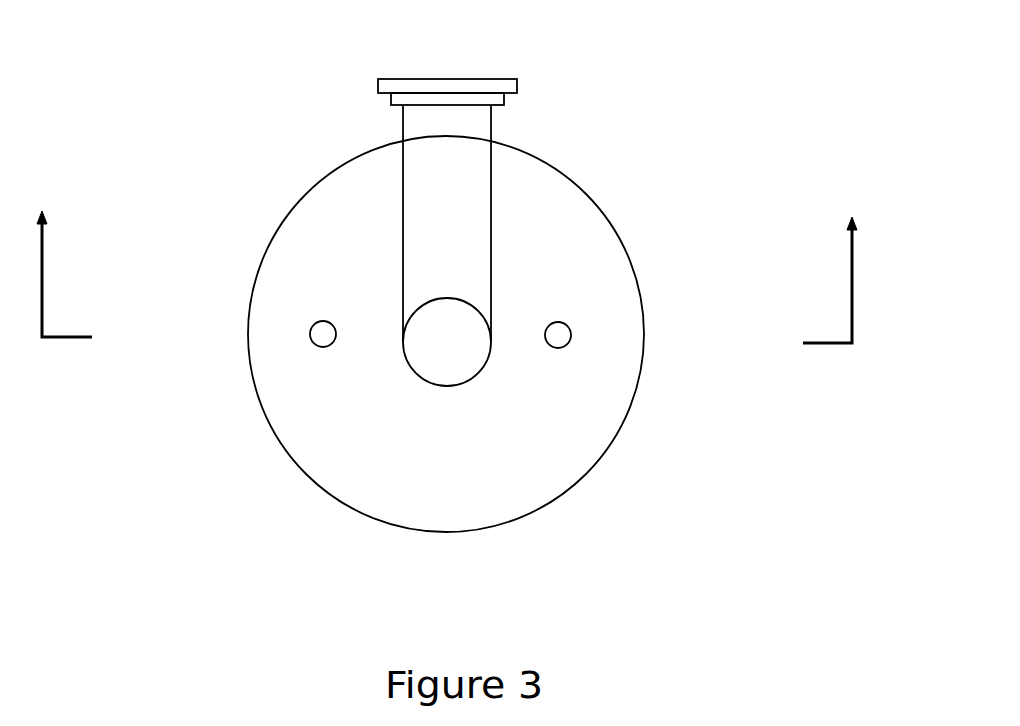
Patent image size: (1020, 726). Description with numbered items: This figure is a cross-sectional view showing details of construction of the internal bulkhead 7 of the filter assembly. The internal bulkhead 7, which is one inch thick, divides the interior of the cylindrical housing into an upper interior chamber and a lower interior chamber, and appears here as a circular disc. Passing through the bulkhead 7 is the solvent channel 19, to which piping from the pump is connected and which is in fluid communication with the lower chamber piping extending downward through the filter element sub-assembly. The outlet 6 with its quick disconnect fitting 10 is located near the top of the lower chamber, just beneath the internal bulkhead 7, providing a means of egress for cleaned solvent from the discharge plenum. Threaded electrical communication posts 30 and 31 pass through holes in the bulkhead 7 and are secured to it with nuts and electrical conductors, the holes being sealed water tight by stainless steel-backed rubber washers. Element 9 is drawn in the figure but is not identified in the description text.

The outlet 6 is at (432, 163).
The internal bulkhead 7 is at (617, 442).
The flange 9 is at (497, 77).
The quick disconnect fitting 10 is at (467, 257).
The solvent channel 19 is at (433, 363).
The threaded electrical communication post 30 is at (571, 337).
The threaded electrical communication post 31 is at (310, 340).